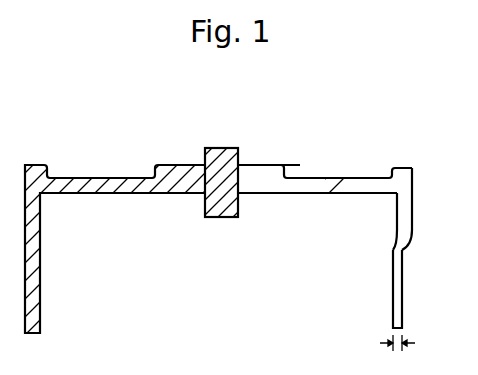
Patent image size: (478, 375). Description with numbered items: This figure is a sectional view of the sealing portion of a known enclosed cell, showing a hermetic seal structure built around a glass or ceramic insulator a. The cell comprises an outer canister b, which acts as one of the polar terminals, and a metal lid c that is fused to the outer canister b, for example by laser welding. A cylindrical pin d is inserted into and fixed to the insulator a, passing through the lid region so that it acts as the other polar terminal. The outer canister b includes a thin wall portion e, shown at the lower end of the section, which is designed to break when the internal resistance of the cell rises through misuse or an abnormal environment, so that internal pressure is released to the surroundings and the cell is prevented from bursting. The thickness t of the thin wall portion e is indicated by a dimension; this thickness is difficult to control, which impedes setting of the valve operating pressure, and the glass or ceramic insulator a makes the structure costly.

The insulator a is at (262, 166).
The outer canister b is at (412, 217).
The metal lid c is at (352, 178).
The cylindrical pin d is at (222, 150).
The thin wall portion e is at (402, 292).
The thickness t is at (404, 343).